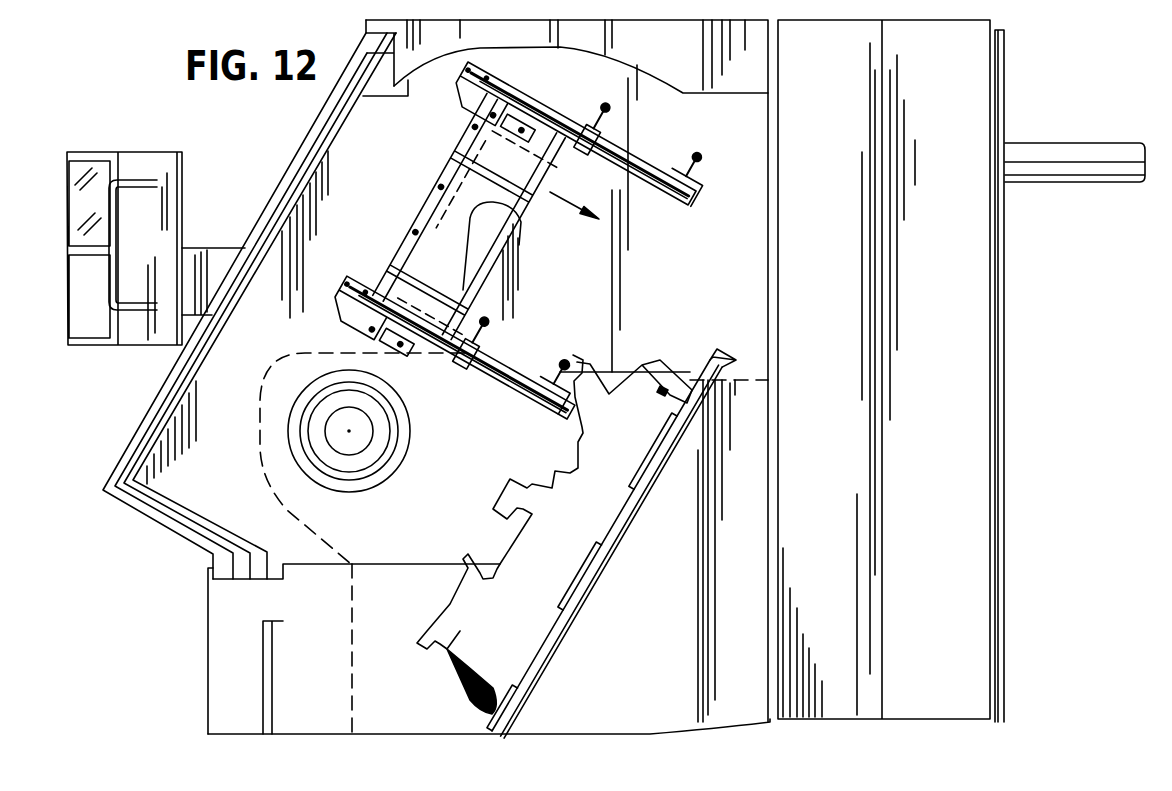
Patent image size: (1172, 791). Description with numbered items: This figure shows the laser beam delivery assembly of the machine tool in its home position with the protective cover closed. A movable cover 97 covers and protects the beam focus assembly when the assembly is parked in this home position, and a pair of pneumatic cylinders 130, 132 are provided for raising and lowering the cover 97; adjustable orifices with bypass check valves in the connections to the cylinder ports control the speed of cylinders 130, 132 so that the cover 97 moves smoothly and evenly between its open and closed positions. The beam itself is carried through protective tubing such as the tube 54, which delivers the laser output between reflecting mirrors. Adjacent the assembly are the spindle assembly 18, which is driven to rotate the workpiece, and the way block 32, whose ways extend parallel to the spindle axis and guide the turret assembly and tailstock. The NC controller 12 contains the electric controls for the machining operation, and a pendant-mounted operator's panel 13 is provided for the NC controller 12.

The NC controller 12 is at (970, 75).
The operator's panel 13 is at (165, 207).
The spindle assembly 18 is at (406, 422).
The way block 32 is at (460, 631).
The tube 54 is at (1040, 143).
The movable cover 97 is at (507, 222).
The pneumatic cylinder 130 is at (498, 362).
The pneumatic cylinder 132 is at (627, 153).